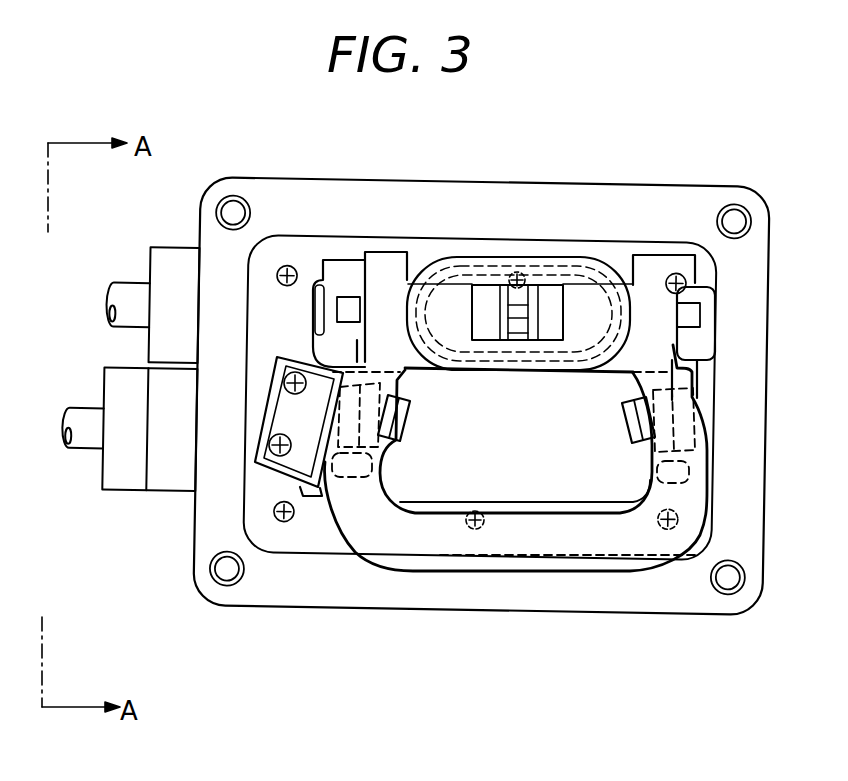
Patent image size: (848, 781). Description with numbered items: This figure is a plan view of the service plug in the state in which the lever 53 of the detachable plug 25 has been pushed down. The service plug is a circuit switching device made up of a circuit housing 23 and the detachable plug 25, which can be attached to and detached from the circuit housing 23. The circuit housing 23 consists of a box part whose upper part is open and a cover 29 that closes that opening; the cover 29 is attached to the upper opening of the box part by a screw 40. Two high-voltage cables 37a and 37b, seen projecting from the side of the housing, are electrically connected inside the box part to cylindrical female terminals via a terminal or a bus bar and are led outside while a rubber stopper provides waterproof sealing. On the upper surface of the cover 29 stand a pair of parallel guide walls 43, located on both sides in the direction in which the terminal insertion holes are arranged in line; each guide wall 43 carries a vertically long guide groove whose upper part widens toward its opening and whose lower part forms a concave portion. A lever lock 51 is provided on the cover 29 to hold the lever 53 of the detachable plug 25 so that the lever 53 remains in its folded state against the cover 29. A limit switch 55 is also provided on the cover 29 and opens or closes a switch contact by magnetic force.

The circuit housing 23 is at (660, 614).
The detachable plug 25 is at (661, 237).
The cover 29 is at (348, 558).
The high-voltage cable 37a is at (118, 286).
The high-voltage cable 37b is at (80, 413).
The screw 40 is at (289, 263).
The guide wall 43 is at (334, 268).
The lever lock 51 is at (613, 420).
The lever 53 is at (708, 528).
The limit switch 55 is at (312, 410).